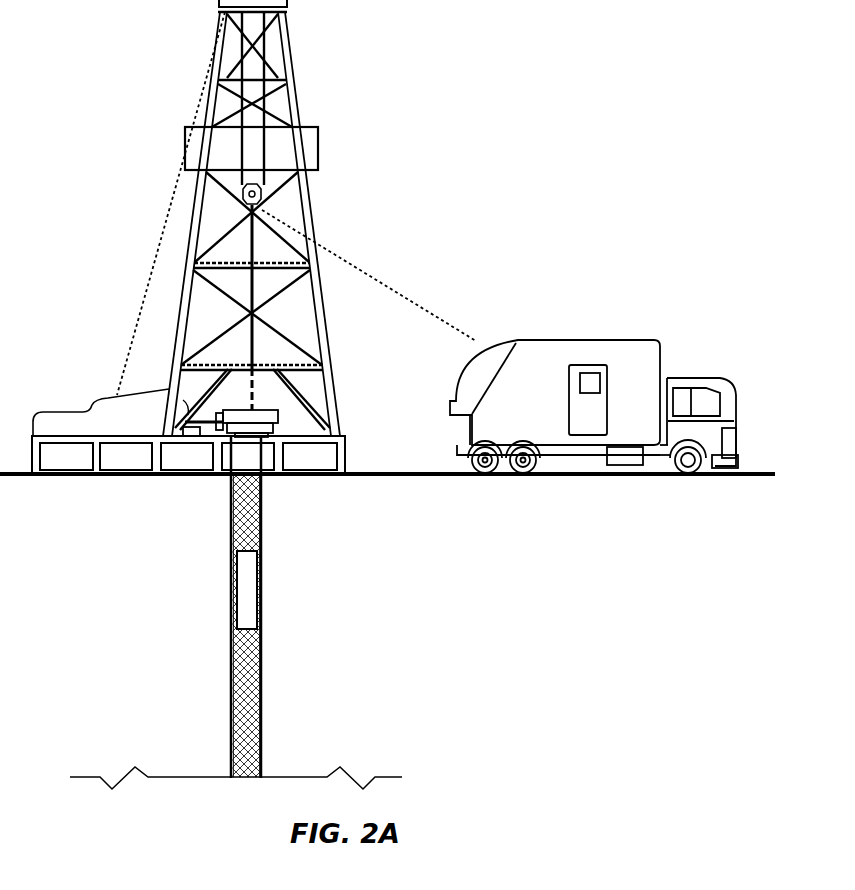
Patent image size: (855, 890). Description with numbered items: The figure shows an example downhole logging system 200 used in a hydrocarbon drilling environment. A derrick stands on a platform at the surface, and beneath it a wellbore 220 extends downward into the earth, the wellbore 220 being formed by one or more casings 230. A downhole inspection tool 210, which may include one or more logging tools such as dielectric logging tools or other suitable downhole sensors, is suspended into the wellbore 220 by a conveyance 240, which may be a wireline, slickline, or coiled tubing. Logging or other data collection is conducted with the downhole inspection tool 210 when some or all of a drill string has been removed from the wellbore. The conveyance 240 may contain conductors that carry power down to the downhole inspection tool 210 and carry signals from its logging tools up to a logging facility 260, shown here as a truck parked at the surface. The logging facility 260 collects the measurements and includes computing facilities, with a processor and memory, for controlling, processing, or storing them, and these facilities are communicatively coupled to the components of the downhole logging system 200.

The downhole logging system 200 is at (495, 75).
The logging facility 260 is at (583, 335).
The conveyance 240 is at (238, 528).
The downhole inspection tool 210 is at (253, 603).
The wellbore 220 is at (255, 668).
The casing 230 is at (226, 680).